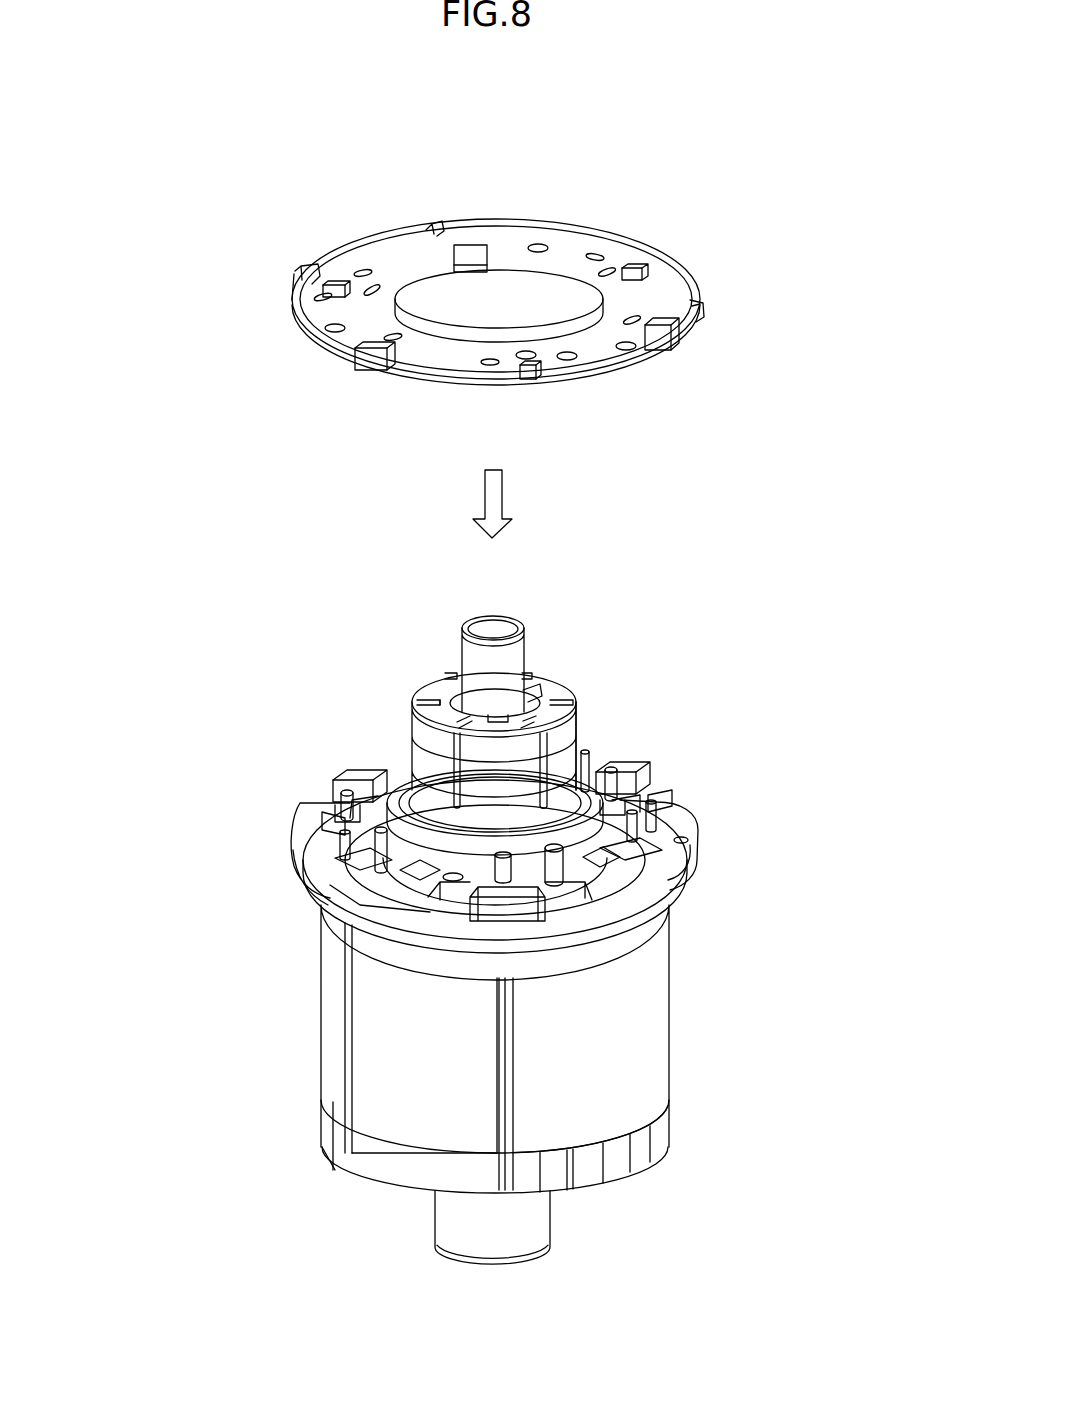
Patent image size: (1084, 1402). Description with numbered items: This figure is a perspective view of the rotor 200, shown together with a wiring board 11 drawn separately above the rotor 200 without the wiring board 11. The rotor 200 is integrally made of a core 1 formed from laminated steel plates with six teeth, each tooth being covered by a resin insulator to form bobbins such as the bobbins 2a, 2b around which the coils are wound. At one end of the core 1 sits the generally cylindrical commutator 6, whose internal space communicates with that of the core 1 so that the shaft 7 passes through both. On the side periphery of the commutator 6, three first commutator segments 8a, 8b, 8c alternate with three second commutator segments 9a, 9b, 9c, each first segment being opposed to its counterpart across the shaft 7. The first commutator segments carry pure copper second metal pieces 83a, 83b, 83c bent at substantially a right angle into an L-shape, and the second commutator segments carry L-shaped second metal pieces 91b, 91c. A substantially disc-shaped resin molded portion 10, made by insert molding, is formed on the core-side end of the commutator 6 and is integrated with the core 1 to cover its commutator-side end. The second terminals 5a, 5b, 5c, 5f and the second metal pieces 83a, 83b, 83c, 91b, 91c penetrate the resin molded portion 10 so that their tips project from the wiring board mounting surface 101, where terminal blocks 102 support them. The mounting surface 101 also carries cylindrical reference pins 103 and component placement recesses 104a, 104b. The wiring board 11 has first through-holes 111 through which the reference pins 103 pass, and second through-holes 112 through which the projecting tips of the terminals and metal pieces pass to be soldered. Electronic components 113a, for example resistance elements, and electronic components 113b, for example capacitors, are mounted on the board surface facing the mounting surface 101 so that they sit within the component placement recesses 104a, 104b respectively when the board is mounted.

The rotor 200 is at (692, 165).
The wiring board 11 is at (548, 220).
The first through-holes 111 is at (538, 244).
The second through-holes 112 is at (372, 287).
The electronic components 113a is at (333, 285).
The electronic components 113b is at (470, 246).
The shaft 7 is at (482, 616).
The first commutator segment 8a is at (475, 760).
The first commutator segment 8b is at (438, 688).
The first commutator segment 8c is at (562, 698).
The second commutator segment 9a is at (530, 688).
The second commutator segment 9b is at (560, 718).
The second commutator segment 9c is at (438, 705).
The commutator 6 is at (582, 733).
The wiring board mounting surface 101 is at (600, 915).
The resin molded portion 10 is at (445, 918).
The second terminal 5a is at (690, 906).
The second terminal 5b is at (347, 893).
The second terminal 5c is at (306, 848).
The second terminal 5f is at (692, 840).
The second metal piece 91b is at (672, 822).
The second metal piece 91c is at (330, 880).
The second metal piece 83a is at (540, 910).
The second metal piece 83b is at (345, 783).
The second metal piece 83c is at (626, 764).
The terminal blocks 102 is at (347, 790).
The reference pins 103 is at (343, 805).
The component placement recess 104a is at (337, 870).
The component placement recess 104b is at (332, 800).
The core 1 is at (674, 1092).
The bobbin 2a is at (398, 1195).
The bobbin 2b is at (336, 1165).